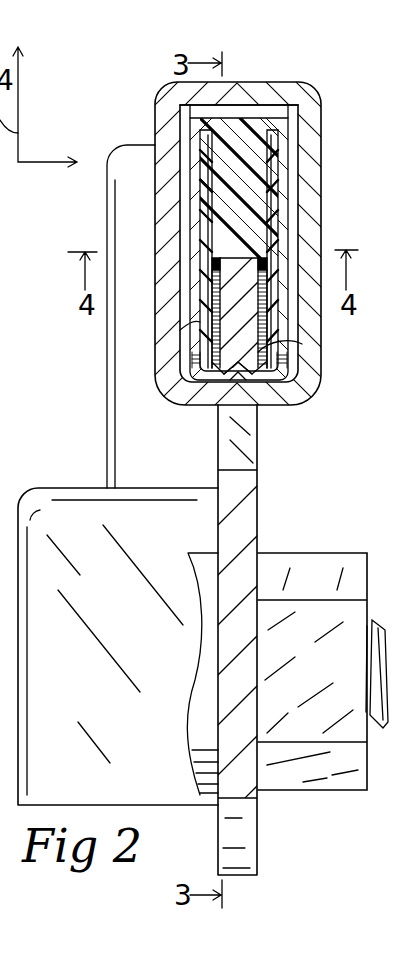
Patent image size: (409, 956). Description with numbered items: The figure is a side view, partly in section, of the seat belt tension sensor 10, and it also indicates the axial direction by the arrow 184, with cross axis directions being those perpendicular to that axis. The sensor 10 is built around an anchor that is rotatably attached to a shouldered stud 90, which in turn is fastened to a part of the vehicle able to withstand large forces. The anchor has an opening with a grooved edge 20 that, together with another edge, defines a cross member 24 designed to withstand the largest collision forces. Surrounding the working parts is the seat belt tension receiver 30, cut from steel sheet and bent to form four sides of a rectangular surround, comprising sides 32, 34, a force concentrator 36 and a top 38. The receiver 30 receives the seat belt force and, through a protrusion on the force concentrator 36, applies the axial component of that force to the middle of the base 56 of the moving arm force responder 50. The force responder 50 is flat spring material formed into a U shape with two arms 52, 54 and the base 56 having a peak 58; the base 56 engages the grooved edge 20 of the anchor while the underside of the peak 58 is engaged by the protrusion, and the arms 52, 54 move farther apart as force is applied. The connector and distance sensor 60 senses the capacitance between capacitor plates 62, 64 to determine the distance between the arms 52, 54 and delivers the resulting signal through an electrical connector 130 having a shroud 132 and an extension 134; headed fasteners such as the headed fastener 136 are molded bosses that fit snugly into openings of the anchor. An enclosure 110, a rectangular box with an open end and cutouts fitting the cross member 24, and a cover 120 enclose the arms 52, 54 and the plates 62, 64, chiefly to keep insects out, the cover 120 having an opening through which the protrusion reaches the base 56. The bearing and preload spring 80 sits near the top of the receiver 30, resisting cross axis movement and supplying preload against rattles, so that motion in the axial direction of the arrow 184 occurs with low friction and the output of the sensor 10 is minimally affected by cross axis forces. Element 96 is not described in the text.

The seat belt tension sensor 10 is at (290, 815).
The grooved edge 20 is at (297, 513).
The cross member 24 is at (327, 376).
The seat belt tension receiver 30 is at (143, 182).
The side 32 is at (155, 282).
The side 34 is at (323, 302).
The force concentrator 36 is at (213, 413).
The top 38 is at (250, 82).
The moving arm force responder 50 is at (305, 255).
The arm 52 is at (158, 340).
The arm 54 is at (292, 372).
The base 56 is at (257, 407).
The peak 58 is at (257, 446).
The connector and distance sensor 60 is at (131, 118).
The capacitor plate 62 is at (143, 290).
The capacitor plate 64 is at (293, 198).
The bearing and preload spring 80 is at (264, 105).
The shouldered stud 90 is at (205, 797).
The block 96 is at (315, 792).
The enclosure 110 is at (180, 190).
The cover 120 is at (172, 462).
The electrical connector 130 is at (63, 470).
The shroud 132 is at (97, 683).
The extension 134 is at (105, 320).
The headed fastener 136 is at (260, 541).
The arrow 184 is at (35, 160).